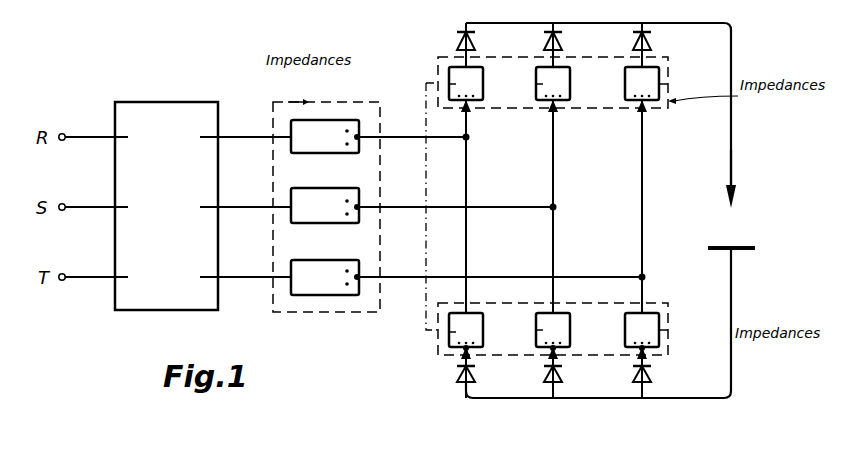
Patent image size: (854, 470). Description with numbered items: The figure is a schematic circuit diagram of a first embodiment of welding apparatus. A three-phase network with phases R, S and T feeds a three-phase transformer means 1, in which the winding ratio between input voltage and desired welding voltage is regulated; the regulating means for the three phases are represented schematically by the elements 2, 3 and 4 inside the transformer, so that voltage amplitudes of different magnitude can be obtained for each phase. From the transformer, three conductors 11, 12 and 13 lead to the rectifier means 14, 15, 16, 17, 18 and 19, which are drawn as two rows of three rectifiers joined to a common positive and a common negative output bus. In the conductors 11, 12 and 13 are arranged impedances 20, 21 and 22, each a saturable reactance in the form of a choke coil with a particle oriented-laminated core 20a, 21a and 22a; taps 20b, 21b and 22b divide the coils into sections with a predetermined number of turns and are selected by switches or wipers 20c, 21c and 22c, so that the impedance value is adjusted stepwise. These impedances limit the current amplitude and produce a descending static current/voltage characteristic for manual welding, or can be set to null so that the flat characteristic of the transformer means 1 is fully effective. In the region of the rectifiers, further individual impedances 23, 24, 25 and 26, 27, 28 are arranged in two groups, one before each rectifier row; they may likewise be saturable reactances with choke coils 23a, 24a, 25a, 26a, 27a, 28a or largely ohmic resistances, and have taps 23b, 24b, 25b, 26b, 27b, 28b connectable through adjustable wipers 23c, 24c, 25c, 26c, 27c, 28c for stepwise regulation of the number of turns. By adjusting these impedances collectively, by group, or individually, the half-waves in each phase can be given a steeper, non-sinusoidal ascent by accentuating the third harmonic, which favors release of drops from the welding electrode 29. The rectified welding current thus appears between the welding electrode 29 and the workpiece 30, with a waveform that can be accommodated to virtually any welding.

The three-phase transformer means 1 is at (175, 87).
The winding ratio regulation means 2 is at (178, 138).
The winding ratio regulation means 3 is at (178, 208).
The winding ratio regulation means 4 is at (178, 278).
The conductor 11 is at (412, 126).
The conductor 12 is at (456, 196).
The conductor 13 is at (500, 267).
The rectifier 14 is at (478, 45).
The rectifier 15 is at (566, 45).
The rectifier 16 is at (655, 45).
The rectifier 17 is at (479, 372).
The rectifier 18 is at (567, 372).
The rectifier 19 is at (655, 372).
The impedance 20 is at (345, 111).
The choke coil with particle oriented-laminated core 20a is at (300, 120).
The tap 20b is at (348, 128).
The switch or wiper 20c is at (361, 135).
The impedance 21 is at (328, 193).
The choke coil with particle oriented-laminated core 21a is at (300, 188).
The tap 21b is at (346, 198).
The switch or wiper 21c is at (358, 204).
The impedance 22 is at (325, 286).
The choke coil with particle oriented-laminated core 22a is at (302, 260).
The tap 22b is at (347, 268).
The switch or wiper 22c is at (357, 281).
The impedance 23 is at (460, 89).
The choke coil with particle oriented-laminated core 23a is at (484, 96).
The tap 23b is at (449, 85).
The switch or wiper 23c is at (473, 104).
The impedance 24 is at (563, 100).
The choke coil with particle oriented-laminated core 24a is at (571, 96).
The tap 24b is at (536, 86).
The switch or wiper 24c is at (560, 104).
The impedance 25 is at (648, 97).
The choke coil with particle oriented-laminated core 25a is at (668, 86).
The tap 25b is at (625, 84).
The switch or wiper 25c is at (650, 104).
The impedance 26 is at (463, 344).
The choke coil with particle oriented-laminated core 26a is at (490, 345).
The tap 26b is at (449, 334).
The switch or wiper 26c is at (461, 353).
The impedance 27 is at (555, 344).
The choke coil with particle oriented-laminated core 27a is at (571, 343).
The tap 27b is at (536, 330).
The switch or wiper 27c is at (549, 355).
The impedance 28 is at (649, 338).
The choke coil with particle oriented-laminated core 28a is at (668, 333).
The tap 28b is at (625, 330).
The switch or wiper 28c is at (648, 352).
The welding electrode 29 is at (746, 179).
The workpiece 30 is at (737, 237).